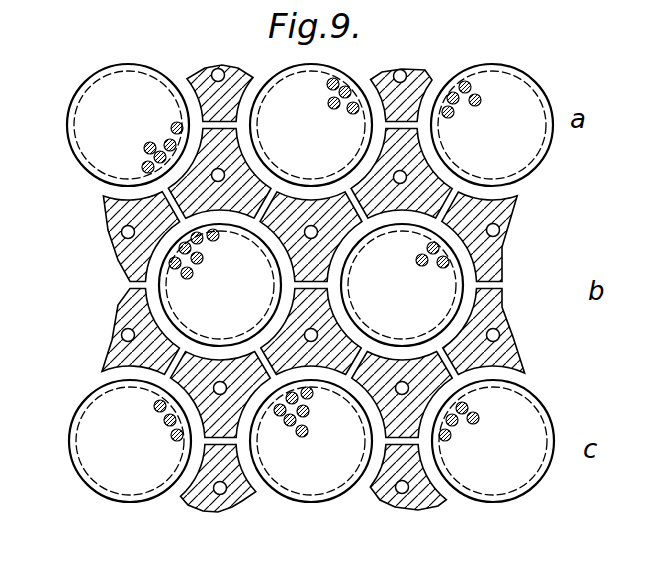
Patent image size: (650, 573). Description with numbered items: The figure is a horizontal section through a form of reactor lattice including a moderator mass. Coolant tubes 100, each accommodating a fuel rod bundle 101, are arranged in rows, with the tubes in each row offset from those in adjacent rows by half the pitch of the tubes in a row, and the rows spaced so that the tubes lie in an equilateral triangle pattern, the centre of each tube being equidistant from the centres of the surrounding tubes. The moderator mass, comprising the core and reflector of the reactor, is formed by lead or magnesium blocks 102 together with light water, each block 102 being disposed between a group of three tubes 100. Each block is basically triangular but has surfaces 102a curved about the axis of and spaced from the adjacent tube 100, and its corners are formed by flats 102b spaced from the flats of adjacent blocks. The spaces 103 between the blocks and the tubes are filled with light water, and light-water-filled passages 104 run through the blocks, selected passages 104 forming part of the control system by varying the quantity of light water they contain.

The coolant tube 100 is at (127, 64).
The fuel rod bundle 101 is at (338, 79).
The block 102 is at (163, 357).
The curved surface 102a is at (478, 257).
The flat 102b is at (395, 431).
The space 103 is at (172, 366).
The passage 104 is at (216, 170).